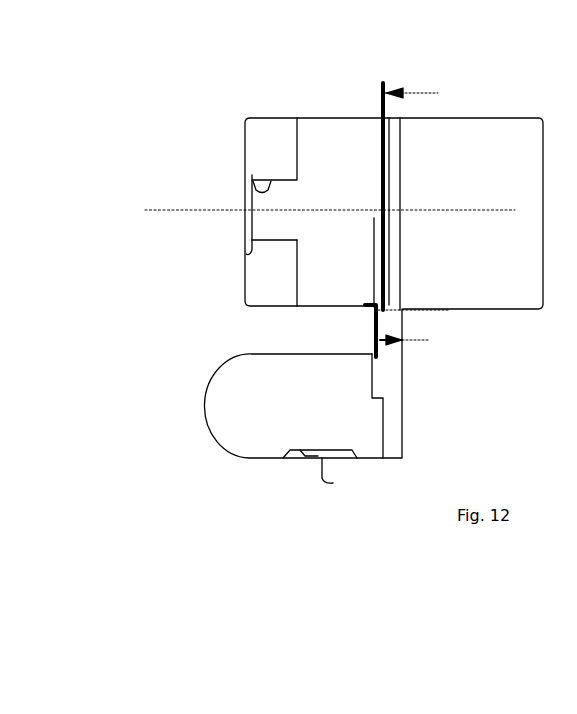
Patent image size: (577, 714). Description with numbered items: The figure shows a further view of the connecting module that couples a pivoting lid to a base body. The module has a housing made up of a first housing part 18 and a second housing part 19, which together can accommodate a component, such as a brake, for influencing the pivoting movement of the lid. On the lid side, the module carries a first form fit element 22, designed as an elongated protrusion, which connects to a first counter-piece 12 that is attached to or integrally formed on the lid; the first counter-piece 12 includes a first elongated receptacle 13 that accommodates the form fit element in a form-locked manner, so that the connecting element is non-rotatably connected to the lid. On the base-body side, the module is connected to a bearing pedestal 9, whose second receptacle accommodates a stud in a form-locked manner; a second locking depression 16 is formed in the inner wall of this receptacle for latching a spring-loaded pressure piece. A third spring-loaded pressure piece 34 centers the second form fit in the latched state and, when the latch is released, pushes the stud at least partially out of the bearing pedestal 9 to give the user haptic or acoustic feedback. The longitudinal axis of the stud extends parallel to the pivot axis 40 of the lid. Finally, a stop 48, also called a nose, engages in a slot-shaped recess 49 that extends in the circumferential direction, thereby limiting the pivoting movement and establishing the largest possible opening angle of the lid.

The bearing pedestal 9 is at (228, 420).
The first counter-piece 12 is at (268, 130).
The first elongated receptacle 13 is at (248, 188).
The second locking depression 16 is at (305, 460).
The first housing part 18 is at (343, 130).
The second housing part 19 is at (500, 137).
The first form fit element 22 is at (262, 229).
The third spring-loaded pressure piece 34 is at (342, 475).
The pivot axis 40 is at (160, 212).
The stop 48 is at (367, 308).
The slot-shaped recess 49 is at (375, 282).